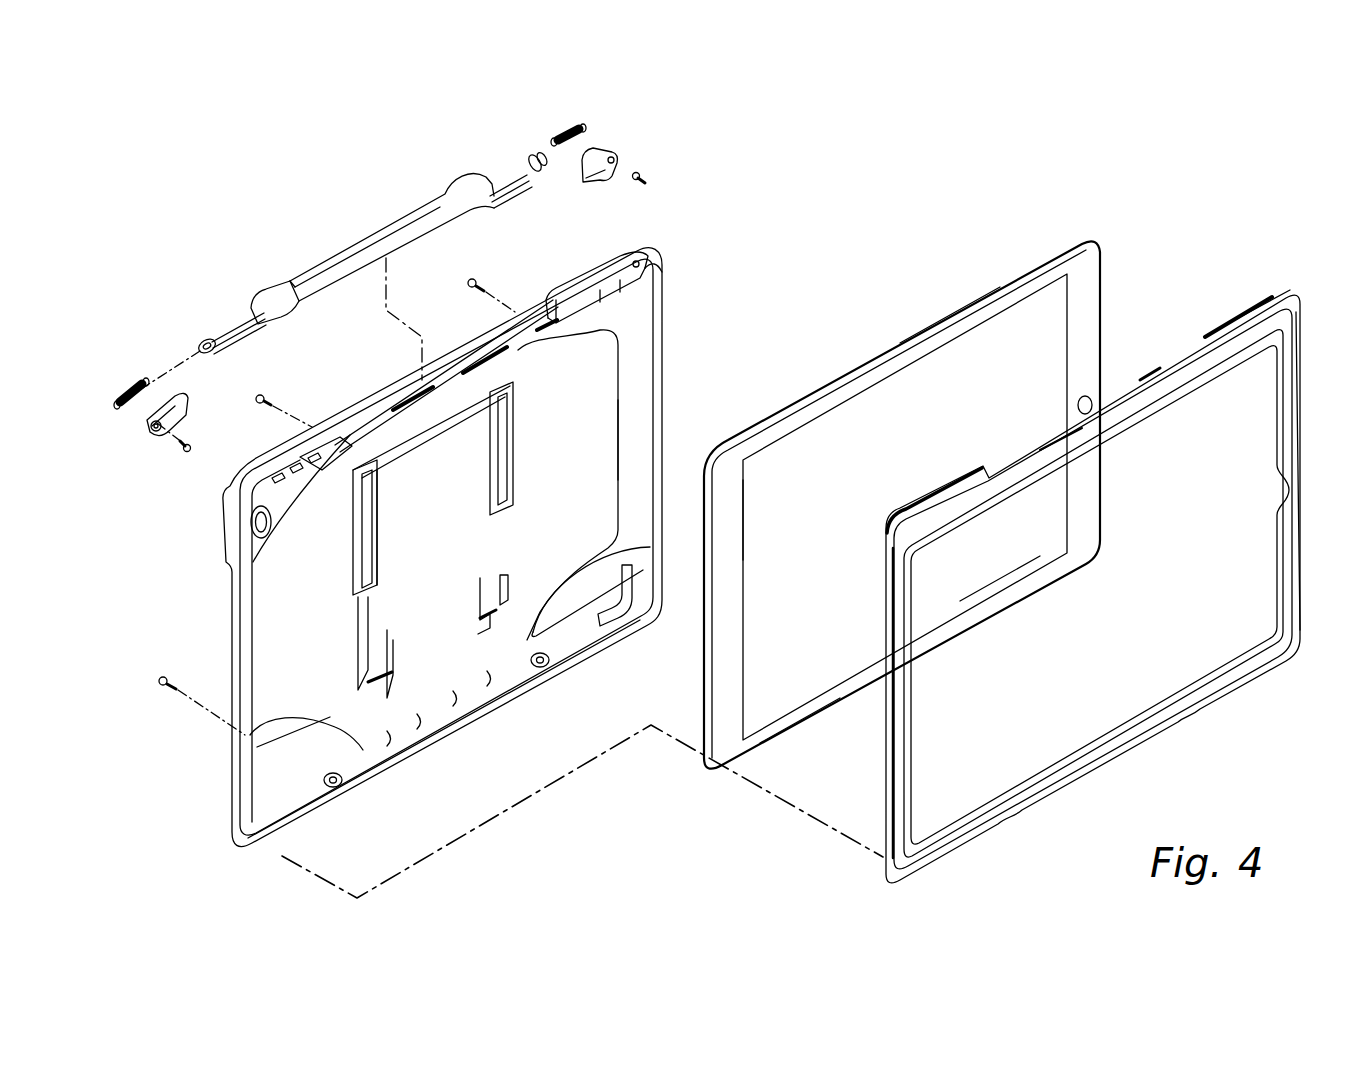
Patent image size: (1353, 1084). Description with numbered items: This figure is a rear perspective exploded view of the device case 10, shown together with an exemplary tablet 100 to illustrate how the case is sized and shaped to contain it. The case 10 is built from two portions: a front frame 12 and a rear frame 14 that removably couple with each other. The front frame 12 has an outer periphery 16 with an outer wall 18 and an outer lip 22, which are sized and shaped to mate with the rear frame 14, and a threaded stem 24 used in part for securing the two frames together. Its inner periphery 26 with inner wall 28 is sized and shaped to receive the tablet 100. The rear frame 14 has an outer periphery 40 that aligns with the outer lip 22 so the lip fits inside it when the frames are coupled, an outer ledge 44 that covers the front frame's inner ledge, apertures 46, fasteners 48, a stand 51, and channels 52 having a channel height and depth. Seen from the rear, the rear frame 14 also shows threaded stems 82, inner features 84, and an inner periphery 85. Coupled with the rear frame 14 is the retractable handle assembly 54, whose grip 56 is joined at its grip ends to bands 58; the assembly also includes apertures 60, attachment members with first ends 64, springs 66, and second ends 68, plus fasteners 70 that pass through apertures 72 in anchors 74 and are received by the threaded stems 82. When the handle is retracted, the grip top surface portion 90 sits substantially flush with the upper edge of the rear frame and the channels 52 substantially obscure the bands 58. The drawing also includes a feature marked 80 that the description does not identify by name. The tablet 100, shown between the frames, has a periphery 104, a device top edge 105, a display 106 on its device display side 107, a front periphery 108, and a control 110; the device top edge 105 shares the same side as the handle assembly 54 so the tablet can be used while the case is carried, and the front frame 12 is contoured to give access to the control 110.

The device case 10 is at (910, 158).
The front frame 12 is at (1201, 226).
The rear frame 14 is at (714, 272).
The outer periphery 16 is at (1284, 680).
The outer wall 18 is at (1290, 310).
The outer lip 22 is at (1242, 303).
The threaded stem 24 is at (1173, 357).
The inner periphery 26 is at (1243, 572).
The inner wall 28 is at (1277, 423).
The outer periphery 40 is at (224, 494).
The outer ledge 44 is at (452, 372).
The apertures 46 is at (545, 668).
The fasteners 48 is at (263, 394).
The stand 51 is at (466, 540).
The channels 52 is at (547, 304).
The handle assembly 54 is at (301, 196).
The grip 56 is at (363, 237).
The bands 58 is at (234, 320).
The apertures 60 is at (205, 340).
The first ends 64 is at (547, 146).
The springs 66 is at (568, 140).
The second ends 68 is at (584, 134).
The fasteners 70 is at (642, 178).
The apertures 72 is at (617, 162).
The anchors 74 is at (607, 180).
The plate surface 80 is at (588, 437).
The threaded stems 82 is at (663, 266).
The inner features 84 is at (589, 355).
The inner periphery 85 is at (654, 385).
The grip top surface portion 90 is at (434, 198).
The tablet 100 is at (1058, 210).
The periphery 104 is at (948, 307).
The device top edge 105 is at (813, 372).
The display 106 is at (837, 655).
The device display side 107 is at (1010, 632).
The front periphery 108 is at (704, 688).
The control 110 is at (1097, 393).